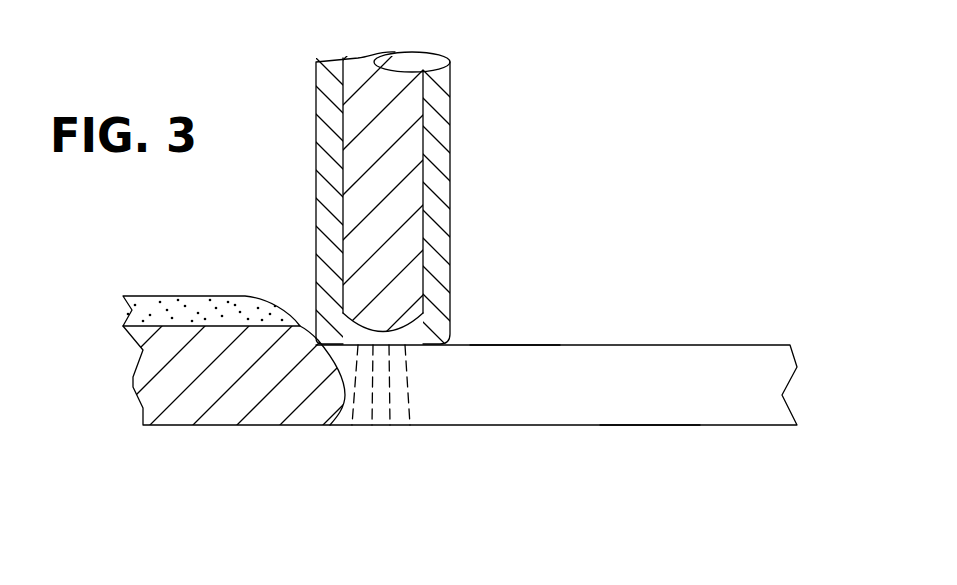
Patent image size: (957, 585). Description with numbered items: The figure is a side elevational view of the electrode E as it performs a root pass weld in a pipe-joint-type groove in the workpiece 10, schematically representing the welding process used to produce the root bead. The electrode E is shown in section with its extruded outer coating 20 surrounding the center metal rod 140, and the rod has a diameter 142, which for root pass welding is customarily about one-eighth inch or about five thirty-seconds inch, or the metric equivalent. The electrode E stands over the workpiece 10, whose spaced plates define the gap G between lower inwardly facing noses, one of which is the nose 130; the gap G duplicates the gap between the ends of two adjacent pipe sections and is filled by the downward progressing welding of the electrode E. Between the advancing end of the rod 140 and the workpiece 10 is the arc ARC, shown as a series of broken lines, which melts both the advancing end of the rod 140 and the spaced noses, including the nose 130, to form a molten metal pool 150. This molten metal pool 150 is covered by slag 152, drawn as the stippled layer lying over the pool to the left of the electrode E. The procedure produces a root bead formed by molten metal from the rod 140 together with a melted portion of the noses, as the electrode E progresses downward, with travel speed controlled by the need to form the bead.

The workpiece 10 is at (700, 336).
The lower inwardly facing nose 130 is at (502, 365).
The molten metal pool 150 is at (327, 425).
The slag 152 is at (160, 296).
The electrode E is at (409, 210).
The extruded outer coating 20 is at (450, 272).
The center metal rod 140 is at (413, 104).
The diameter 142 is at (245, 212).
The arc ARC is at (410, 383).
The gap G is at (640, 403).